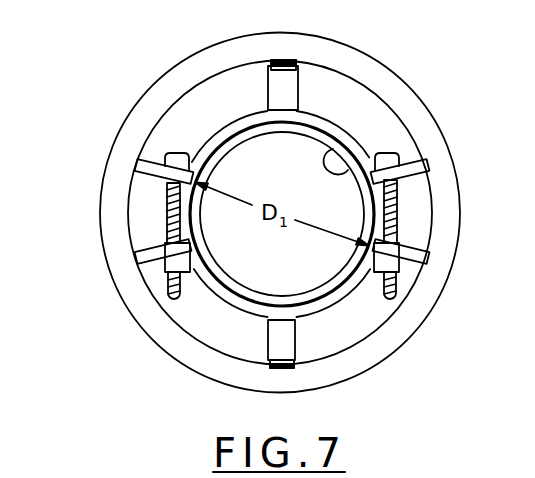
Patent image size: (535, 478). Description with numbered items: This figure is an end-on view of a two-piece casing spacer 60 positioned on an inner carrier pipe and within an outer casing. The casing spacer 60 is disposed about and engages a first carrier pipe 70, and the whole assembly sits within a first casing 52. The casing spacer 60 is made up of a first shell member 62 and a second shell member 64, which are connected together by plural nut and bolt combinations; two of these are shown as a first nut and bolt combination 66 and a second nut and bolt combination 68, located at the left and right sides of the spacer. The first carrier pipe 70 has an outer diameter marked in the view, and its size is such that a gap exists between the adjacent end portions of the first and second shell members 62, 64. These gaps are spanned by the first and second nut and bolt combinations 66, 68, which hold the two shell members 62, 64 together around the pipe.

The first casing 52 is at (378, 75).
The casing spacer 60 is at (183, 124).
The first shell member 62 is at (238, 122).
The second shell member 64 is at (343, 297).
The first nut and bolt combination 66 is at (170, 208).
The second nut and bolt combination 68 is at (397, 205).
The first carrier pipe 70 is at (333, 149).